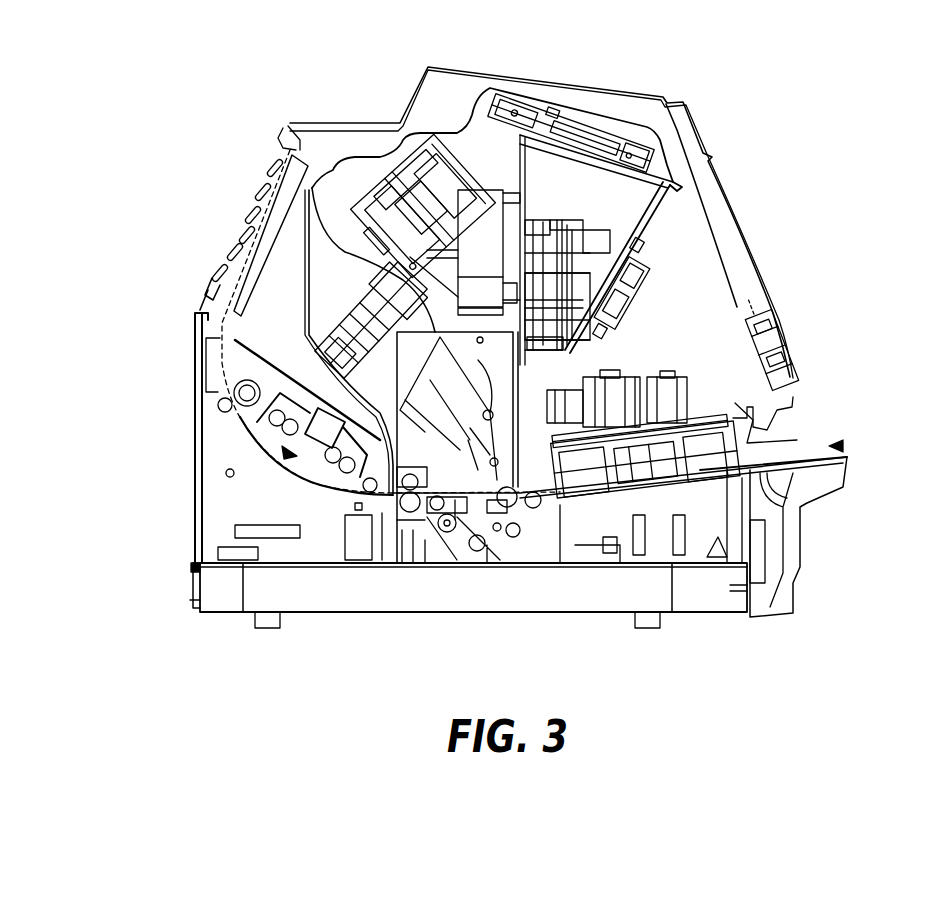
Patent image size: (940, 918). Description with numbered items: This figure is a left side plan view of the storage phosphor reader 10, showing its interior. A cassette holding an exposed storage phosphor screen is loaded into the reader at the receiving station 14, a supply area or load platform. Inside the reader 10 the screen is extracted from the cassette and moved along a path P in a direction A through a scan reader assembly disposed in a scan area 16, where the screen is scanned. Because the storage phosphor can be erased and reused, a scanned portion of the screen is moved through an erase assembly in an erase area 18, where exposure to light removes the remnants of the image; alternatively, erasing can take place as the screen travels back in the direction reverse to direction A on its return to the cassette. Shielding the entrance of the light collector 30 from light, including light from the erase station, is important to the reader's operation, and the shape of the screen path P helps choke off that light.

The storage phosphor reader 10 is at (789, 114).
The light collector 30 is at (325, 243).
The path P is at (246, 228).
The erase area 18 is at (268, 452).
The receiving station 14 is at (800, 437).
The direction A is at (843, 446).
The scan area 16 is at (441, 566).